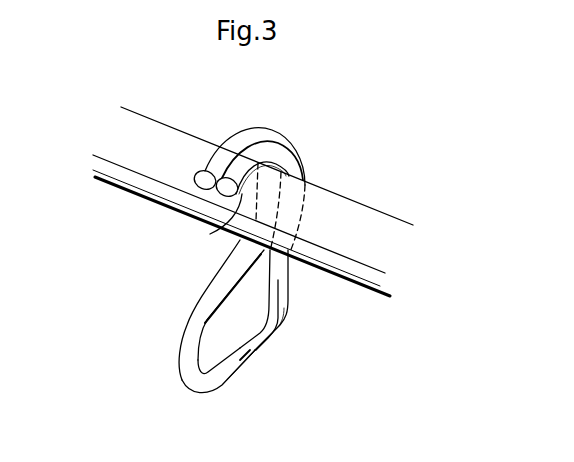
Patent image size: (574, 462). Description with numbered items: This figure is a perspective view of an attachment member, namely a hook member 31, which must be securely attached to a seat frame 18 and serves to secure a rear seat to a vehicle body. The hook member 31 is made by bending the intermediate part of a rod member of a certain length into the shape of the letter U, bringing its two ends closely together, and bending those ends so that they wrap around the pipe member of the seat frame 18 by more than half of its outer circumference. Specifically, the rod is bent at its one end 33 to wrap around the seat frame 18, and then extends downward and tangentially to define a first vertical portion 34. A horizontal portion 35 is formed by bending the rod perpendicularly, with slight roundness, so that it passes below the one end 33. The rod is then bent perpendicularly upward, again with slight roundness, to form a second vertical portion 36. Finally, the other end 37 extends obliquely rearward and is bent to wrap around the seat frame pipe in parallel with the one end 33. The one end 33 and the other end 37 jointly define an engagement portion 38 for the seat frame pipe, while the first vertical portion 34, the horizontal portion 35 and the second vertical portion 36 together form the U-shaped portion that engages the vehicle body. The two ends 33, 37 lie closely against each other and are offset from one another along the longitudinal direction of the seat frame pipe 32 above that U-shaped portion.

The seat frame 18 is at (363, 205).
The hook member 31 is at (209, 257).
The seat frame pipe 32 is at (242, 321).
The one end 33 is at (228, 140).
The first vertical portion 34 is at (289, 279).
The horizontal portion 35 is at (250, 364).
The second vertical portion 36 is at (179, 340).
The other end 37 is at (268, 138).
The engagement portion 38 is at (214, 226).